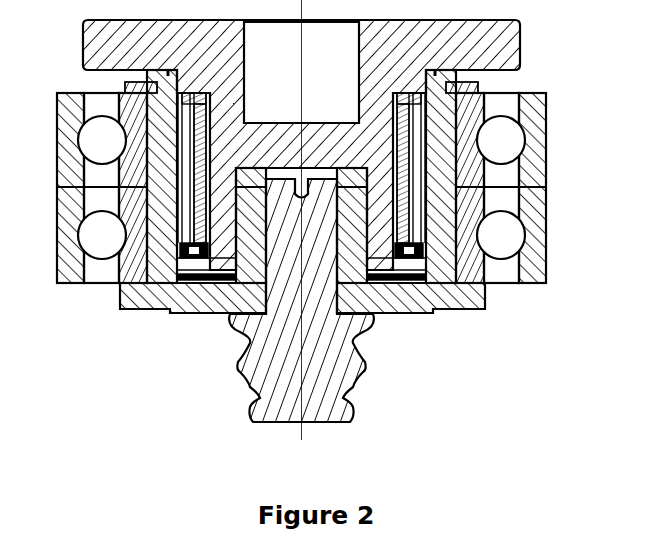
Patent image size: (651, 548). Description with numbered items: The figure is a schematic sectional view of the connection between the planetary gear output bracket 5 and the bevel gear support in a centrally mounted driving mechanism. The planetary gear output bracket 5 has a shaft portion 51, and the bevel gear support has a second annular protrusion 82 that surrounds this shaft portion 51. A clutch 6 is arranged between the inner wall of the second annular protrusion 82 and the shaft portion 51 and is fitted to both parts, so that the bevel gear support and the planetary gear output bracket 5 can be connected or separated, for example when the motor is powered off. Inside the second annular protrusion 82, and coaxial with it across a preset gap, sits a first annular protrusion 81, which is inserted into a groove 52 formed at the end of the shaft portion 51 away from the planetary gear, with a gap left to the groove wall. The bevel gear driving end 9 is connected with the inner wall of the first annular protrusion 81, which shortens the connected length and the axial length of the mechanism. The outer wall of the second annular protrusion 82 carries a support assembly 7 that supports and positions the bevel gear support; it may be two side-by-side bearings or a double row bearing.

The planetary gear output bracket 5 is at (395, 46).
The shaft portion 51 is at (205, 124).
The groove 52 is at (373, 163).
The clutch 6 is at (195, 157).
The support assembly 7 is at (72, 200).
The first annular protrusion 81 is at (347, 177).
The second annular protrusion 82 is at (347, 210).
The bevel gear driving end 9 is at (304, 274).